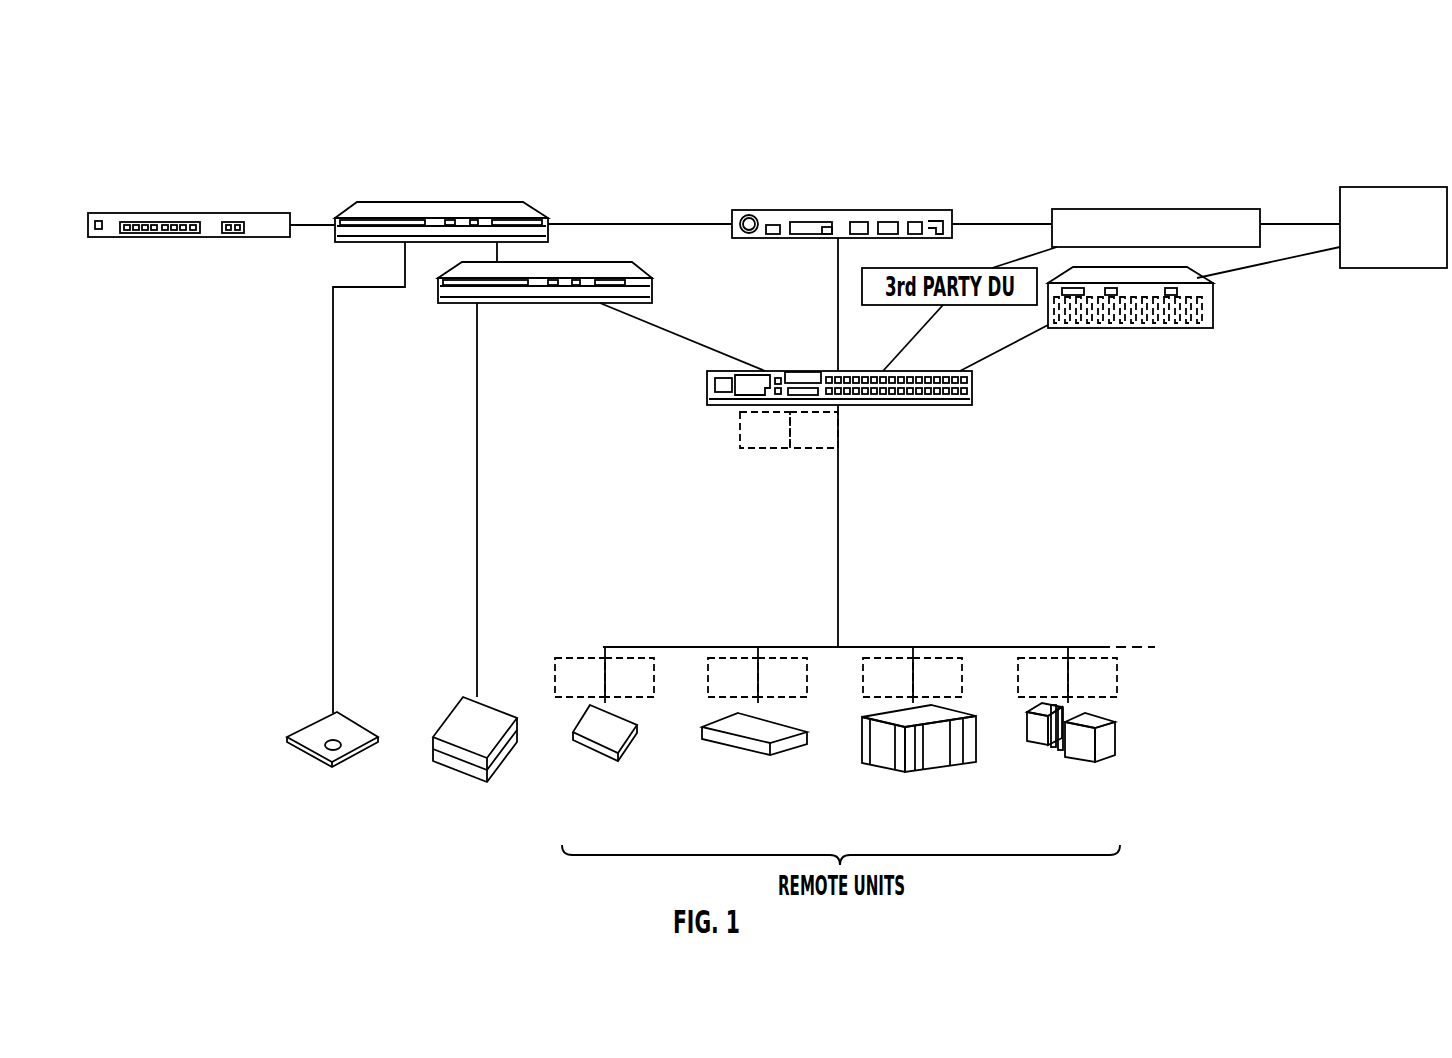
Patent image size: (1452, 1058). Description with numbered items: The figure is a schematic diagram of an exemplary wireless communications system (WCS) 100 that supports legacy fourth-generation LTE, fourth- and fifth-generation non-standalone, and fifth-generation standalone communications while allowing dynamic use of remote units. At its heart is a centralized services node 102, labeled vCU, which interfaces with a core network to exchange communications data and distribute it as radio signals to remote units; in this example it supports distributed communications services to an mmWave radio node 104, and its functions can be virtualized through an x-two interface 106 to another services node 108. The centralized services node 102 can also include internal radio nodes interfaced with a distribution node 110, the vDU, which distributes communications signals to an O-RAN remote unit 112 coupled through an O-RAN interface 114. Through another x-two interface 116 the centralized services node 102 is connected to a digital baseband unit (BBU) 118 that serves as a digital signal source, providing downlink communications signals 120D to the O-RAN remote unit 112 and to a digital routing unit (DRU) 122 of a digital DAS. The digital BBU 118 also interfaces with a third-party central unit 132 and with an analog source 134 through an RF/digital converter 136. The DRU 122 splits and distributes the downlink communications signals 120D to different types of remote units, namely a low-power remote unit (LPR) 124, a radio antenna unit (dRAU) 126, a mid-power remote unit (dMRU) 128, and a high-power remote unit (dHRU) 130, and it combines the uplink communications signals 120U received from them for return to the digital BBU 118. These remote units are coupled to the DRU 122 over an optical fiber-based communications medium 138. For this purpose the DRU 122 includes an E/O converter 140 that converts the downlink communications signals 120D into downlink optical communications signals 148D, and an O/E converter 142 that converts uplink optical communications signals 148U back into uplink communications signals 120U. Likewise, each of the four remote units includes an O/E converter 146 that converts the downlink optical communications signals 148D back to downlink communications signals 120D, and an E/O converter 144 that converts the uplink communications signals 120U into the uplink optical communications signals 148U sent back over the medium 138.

The wireless communications system (WCS) 100 is at (1102, 74).
The centralized services node 102 is at (487, 206).
The mmWave radio node 104 is at (344, 547).
The x2 interface 106 is at (333, 208).
The services node 108 is at (188, 238).
The distribution node 110 is at (578, 304).
The O-RAN remote unit 112 is at (468, 775).
The O-RAN interface 114 is at (490, 535).
The x2 interface 116 is at (676, 208).
The digital baseband unit (BBU) 118 is at (912, 210).
The downlink communications signals 120D is at (775, 304).
The uplink communications signals 120U is at (828, 325).
The digital routing unit (DRU) 122 is at (972, 383).
The low-power remote unit (LPR) 124 is at (599, 763).
The radio antenna unit (dRAU) 126 is at (753, 767).
The mid-power remote unit (dMRU) 128 is at (914, 763).
The high-power remote unit (dHRU) 130 is at (1073, 762).
The third-party central unit 132 is at (1148, 208).
The analog source 134 is at (1372, 187).
The RF/digital converter 136 is at (1150, 309).
The optical fiber-based communications medium 138 is at (838, 540).
The electrical-to-optical (E/O) converter 140 is at (757, 450).
The optical-to-electrical (O/E) converter 142 is at (825, 450).
The E/O converter 144 is at (583, 657).
The O/E converter 146 is at (628, 657).
The downlink optical communications signals 148D is at (879, 586).
The uplink optical communications signals 148U is at (826, 557).